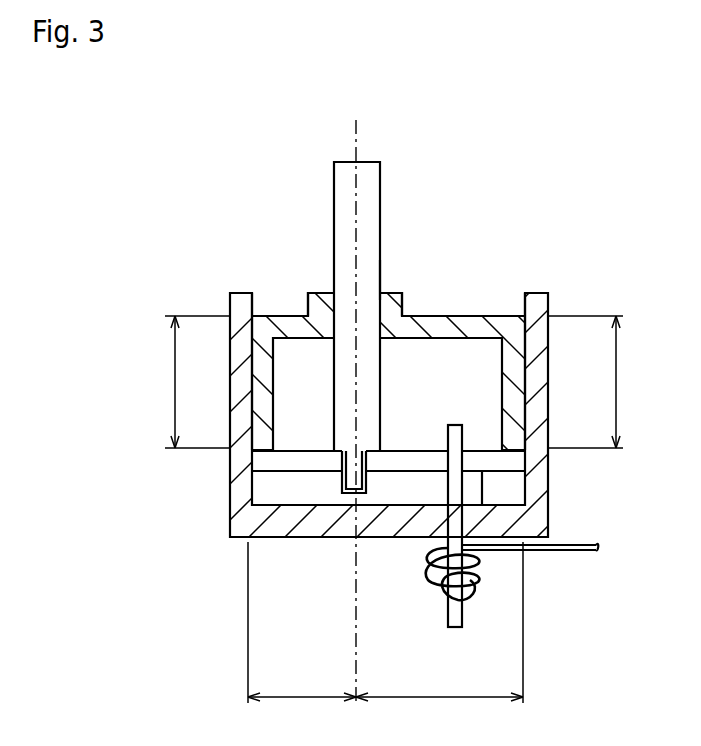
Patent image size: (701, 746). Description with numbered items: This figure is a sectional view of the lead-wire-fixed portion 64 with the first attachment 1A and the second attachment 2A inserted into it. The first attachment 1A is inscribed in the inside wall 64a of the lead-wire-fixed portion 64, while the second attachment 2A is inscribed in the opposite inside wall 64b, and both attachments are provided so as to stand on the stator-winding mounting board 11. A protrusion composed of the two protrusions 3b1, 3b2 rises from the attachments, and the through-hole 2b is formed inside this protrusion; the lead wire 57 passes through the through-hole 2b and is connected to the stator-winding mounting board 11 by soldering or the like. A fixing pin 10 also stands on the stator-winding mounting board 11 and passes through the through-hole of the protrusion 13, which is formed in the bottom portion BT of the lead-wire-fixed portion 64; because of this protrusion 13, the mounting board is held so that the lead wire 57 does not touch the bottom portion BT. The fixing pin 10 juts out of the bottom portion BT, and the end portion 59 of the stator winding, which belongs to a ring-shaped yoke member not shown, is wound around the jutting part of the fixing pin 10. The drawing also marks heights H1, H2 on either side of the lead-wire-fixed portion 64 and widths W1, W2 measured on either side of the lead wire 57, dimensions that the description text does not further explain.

The lead wire 57 is at (367, 177).
The second attachment 2A is at (280, 311).
The protrusion 3b1 is at (320, 290).
The protrusion 3b2 is at (386, 290).
The through-hole 2b is at (384, 290).
The first attachment 1A is at (473, 310).
The inside wall 64b is at (253, 316).
The inside wall 64a is at (524, 316).
The lead-wire-fixed portion 64 is at (553, 339).
The bottom portion BT is at (392, 502).
The stator-winding mounting board 11 is at (273, 474).
The protrusion 13 is at (470, 490).
The fixing pin 10 is at (463, 613).
The end portion of stator winding 59 is at (480, 590).
The height dimension H1 is at (179, 382).
The height dimension H2 is at (585, 382).
The width dimension W1 is at (302, 622).
The width dimension W2 is at (439, 622).